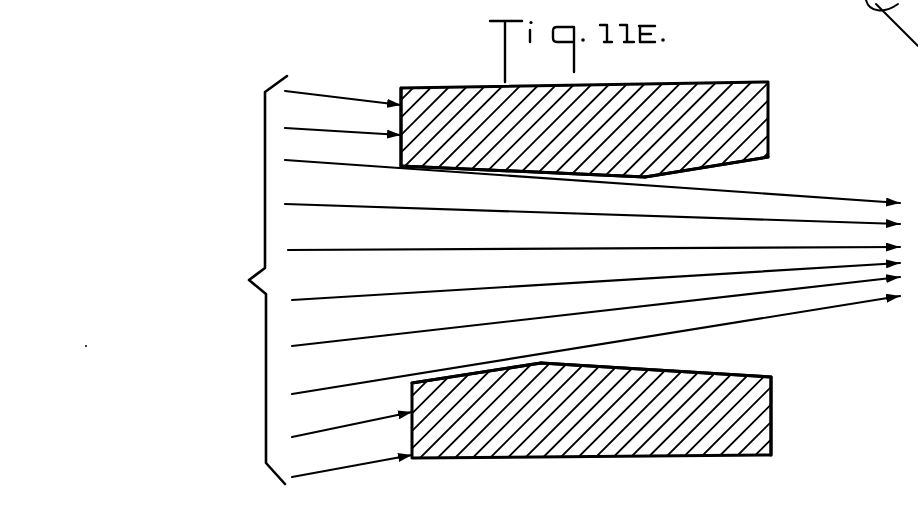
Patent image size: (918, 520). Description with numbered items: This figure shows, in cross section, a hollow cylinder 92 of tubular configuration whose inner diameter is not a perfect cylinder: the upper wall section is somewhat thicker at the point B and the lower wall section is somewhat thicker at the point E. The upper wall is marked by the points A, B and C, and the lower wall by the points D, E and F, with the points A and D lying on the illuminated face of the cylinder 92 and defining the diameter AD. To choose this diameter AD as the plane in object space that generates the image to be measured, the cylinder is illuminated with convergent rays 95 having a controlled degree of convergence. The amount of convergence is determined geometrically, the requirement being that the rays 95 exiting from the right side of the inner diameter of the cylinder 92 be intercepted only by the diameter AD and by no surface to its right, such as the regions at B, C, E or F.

The hollow cylinder 92 is at (768, 122).
The rays 95 is at (258, 288).
The point A is at (418, 154).
The point B is at (647, 173).
The point C is at (763, 158).
The point D is at (415, 387).
The point E is at (542, 365).
The point F is at (767, 382).